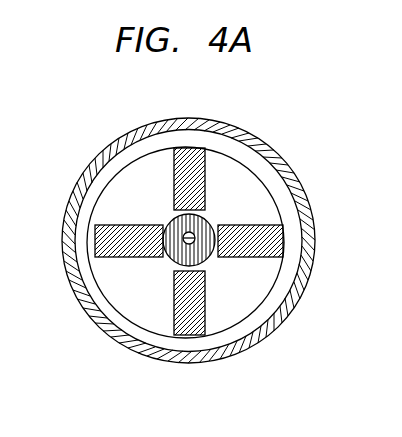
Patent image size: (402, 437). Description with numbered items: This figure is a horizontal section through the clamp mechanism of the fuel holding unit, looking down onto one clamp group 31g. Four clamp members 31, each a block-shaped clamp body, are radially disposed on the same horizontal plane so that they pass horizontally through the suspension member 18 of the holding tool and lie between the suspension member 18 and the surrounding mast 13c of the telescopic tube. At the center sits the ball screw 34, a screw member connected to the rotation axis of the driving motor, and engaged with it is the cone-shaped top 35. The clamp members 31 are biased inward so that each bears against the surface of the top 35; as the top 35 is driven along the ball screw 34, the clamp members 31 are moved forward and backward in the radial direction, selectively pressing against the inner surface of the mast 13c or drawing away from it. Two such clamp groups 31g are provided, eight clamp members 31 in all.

The mast 13c is at (118, 145).
The suspension member 18 is at (102, 197).
The clamp member 31 is at (243, 227).
The ball screw 34 is at (200, 253).
The top 35 is at (180, 229).
The clamp group 31g is at (236, 303).